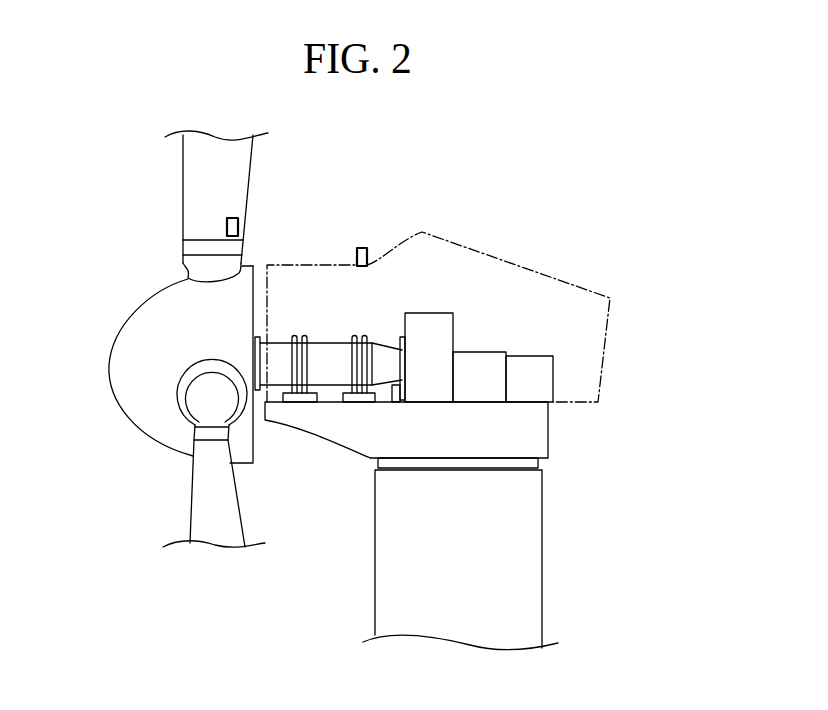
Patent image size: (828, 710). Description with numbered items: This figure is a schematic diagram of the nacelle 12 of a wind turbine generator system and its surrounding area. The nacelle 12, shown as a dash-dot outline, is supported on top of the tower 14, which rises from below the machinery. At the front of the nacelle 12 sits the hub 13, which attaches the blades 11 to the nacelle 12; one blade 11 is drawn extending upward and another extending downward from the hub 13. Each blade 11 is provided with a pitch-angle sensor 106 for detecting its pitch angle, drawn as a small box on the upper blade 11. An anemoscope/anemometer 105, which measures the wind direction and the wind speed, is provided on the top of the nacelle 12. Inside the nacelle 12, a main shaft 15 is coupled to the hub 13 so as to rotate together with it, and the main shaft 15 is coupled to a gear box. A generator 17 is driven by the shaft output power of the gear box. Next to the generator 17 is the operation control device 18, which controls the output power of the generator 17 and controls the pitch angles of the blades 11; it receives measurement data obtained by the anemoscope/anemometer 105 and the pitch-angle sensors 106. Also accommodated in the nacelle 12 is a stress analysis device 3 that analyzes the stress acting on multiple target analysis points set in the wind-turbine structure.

The blades 11 is at (235, 163).
The pitch-angle sensor 106 is at (240, 227).
The anemoscope/anemometer 105 is at (368, 258).
The hub 13 is at (150, 317).
The main shaft 15 is at (332, 361).
The generator 17 is at (432, 338).
The operation control device 18 is at (480, 360).
The stress analysis device 3 is at (532, 367).
The nacelle 12 is at (627, 357).
The tower 14 is at (515, 577).